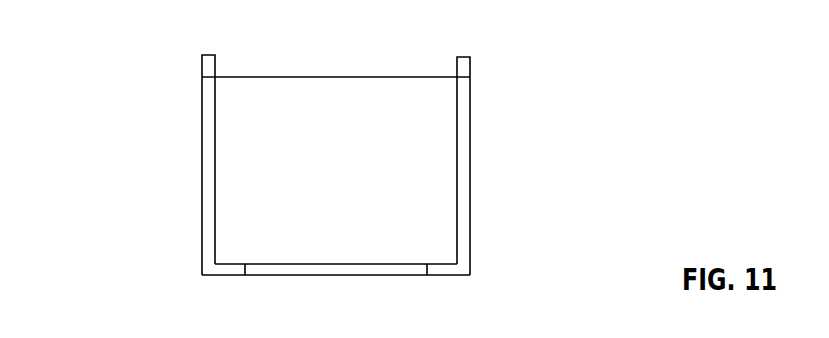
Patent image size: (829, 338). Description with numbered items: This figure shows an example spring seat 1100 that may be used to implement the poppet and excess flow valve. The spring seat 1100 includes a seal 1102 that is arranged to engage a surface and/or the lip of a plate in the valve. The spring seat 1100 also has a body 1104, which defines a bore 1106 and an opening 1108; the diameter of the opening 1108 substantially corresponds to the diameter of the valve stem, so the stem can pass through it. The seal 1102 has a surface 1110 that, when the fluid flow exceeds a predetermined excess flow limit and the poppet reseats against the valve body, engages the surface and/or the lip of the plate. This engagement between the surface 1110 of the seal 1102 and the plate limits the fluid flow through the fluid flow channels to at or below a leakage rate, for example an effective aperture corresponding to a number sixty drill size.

The spring seat 1100 is at (295, 160).
The seal 1102 is at (209, 70).
The body 1104 is at (458, 155).
The bore 1106 is at (215, 185).
The opening 1108 is at (246, 266).
The surface 1110 is at (461, 57).